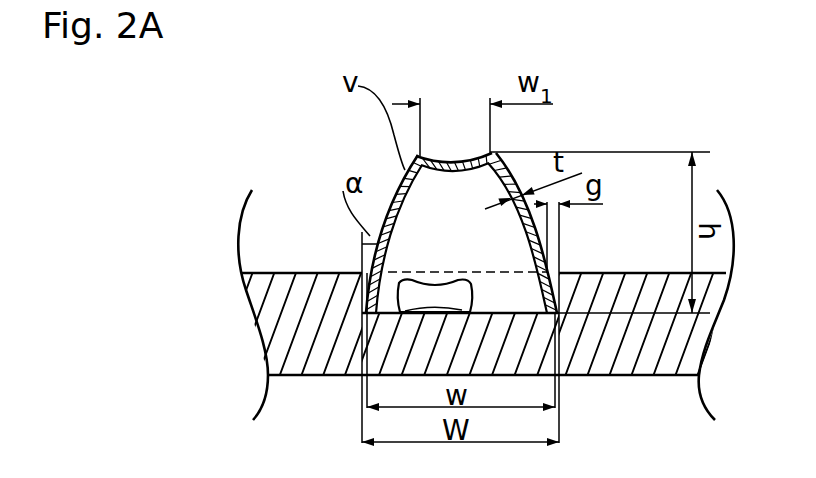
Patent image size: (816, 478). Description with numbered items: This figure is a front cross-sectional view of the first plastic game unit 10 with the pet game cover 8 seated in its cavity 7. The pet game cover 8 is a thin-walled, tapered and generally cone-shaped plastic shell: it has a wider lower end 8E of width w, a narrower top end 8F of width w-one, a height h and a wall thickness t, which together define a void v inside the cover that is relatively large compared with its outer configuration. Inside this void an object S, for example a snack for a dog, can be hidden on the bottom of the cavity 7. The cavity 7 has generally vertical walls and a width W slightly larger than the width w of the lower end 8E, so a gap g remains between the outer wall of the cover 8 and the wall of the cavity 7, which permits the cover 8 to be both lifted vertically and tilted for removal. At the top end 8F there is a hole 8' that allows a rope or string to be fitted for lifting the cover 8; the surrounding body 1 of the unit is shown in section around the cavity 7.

The stator core body 1 is at (259, 273).
The first plastic game unit 10 is at (327, 246).
The cavity 7 is at (348, 303).
The pet game cover 8 is at (449, 213).
The hole 8' is at (457, 93).
The top end 8F is at (478, 152).
The lower end 8E is at (548, 313).
The object S is at (470, 286).